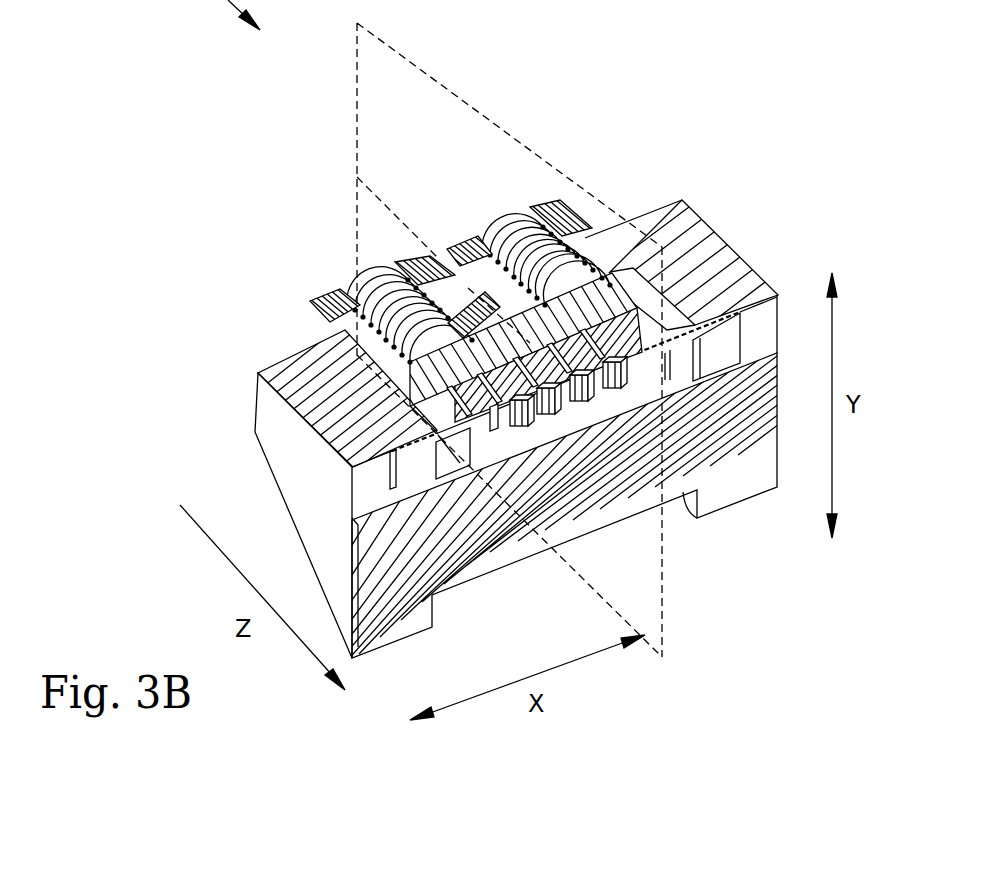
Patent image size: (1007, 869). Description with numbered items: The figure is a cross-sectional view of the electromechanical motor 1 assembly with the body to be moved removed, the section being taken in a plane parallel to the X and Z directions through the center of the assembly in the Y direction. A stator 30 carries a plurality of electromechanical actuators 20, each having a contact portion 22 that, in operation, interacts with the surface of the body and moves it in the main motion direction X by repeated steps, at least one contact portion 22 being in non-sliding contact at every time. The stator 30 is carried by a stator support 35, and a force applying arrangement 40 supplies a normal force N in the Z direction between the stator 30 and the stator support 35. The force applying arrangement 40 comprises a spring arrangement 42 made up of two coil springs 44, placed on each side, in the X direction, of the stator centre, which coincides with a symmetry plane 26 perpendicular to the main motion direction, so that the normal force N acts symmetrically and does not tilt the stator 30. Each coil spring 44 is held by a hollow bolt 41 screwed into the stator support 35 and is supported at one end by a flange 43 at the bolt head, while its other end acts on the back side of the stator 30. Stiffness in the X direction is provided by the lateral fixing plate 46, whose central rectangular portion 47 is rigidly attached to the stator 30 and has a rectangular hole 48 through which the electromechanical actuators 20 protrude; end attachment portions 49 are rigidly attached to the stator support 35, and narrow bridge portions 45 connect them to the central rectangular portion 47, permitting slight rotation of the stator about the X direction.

The electromechanical motor 1 is at (563, 148).
The electromechanical actuator 20 is at (548, 428).
The contact portion 22 is at (553, 414).
The symmetry plane 26 is at (375, 96).
The stator 30 is at (698, 226).
The stator support 35 is at (292, 512).
The force applying arrangement 40 is at (445, 262).
The hollow bolt 41 is at (312, 308).
The spring arrangement 42 is at (341, 219).
The flange 43 is at (340, 292).
The coil spring 44 is at (405, 277).
The bridge portion 45 is at (472, 472).
The lateral fixing plate 46 is at (645, 392).
The central rectangular portion 47 is at (503, 465).
The rectangular hole 48 is at (514, 424).
The end attachment portion 49 is at (408, 478).
The normal force N is at (491, 214).